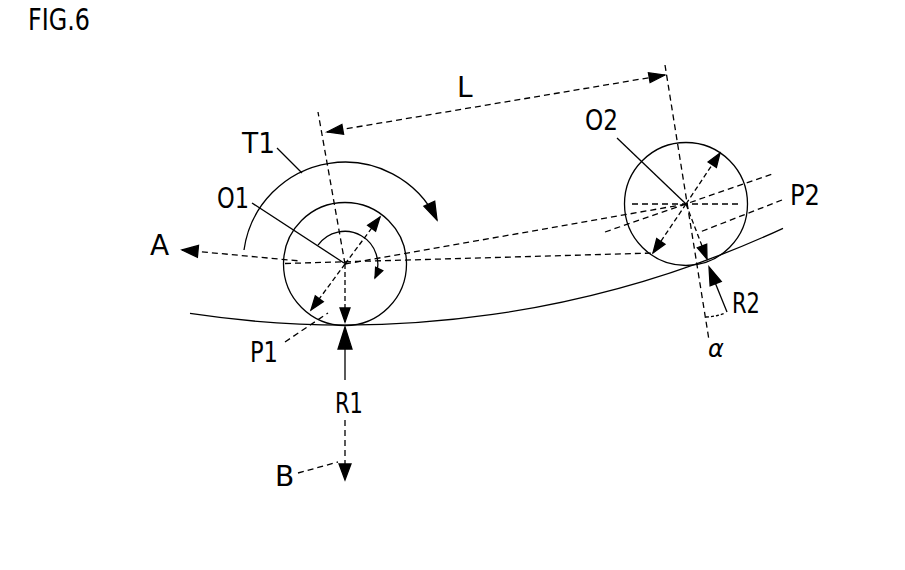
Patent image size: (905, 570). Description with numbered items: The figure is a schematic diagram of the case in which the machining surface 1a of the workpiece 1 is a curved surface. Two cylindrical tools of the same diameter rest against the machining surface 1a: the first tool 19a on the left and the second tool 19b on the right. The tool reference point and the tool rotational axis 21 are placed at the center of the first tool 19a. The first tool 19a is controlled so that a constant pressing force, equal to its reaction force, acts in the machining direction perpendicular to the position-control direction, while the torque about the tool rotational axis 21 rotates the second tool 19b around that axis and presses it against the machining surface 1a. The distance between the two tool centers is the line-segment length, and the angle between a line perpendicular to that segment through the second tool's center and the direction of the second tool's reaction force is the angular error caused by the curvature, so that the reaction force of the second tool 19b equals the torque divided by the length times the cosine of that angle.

The workpiece 1 is at (539, 389).
The machining surface 1a is at (492, 314).
The first tool 19a is at (303, 281).
The second tool 19b is at (738, 165).
The tool rotational axis 21 is at (352, 275).